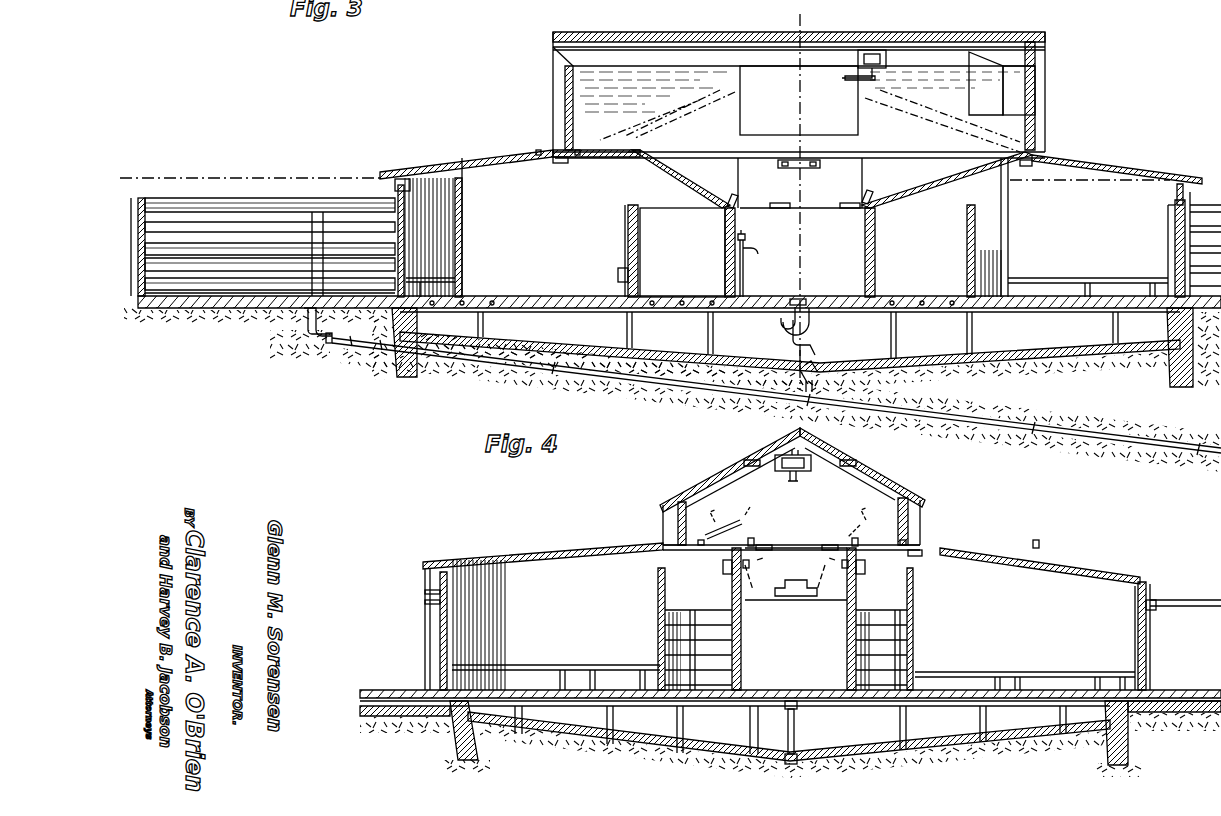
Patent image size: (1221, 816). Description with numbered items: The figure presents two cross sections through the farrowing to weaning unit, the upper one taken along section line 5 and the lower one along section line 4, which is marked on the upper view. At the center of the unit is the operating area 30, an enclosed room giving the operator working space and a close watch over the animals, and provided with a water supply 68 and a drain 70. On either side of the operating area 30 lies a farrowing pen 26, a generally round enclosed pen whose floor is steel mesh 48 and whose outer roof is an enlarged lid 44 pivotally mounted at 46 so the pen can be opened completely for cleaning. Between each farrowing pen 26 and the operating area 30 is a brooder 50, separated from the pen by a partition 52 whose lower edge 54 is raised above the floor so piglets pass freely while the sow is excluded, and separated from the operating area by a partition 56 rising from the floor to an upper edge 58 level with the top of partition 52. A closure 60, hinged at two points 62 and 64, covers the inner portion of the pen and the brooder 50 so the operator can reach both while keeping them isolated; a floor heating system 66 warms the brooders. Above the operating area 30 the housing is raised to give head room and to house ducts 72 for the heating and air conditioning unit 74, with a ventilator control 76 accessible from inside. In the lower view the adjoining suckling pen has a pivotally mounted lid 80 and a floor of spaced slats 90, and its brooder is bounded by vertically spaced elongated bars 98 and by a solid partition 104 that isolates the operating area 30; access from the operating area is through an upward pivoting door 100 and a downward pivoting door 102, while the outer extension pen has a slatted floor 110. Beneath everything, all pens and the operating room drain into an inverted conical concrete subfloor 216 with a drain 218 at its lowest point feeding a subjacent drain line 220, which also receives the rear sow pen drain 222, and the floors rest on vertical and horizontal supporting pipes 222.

In FIG. 3, the section line 4— 4 is at (815, 8).
In FIG. 3, the section line 5— 5 is at (111, 205).
In FIG. 3, the farrowing pen 26 is at (445, 205).
In FIG. 3, the operating area 30 is at (800, 252).
In FIG. 3, the lid 44 is at (458, 165).
In FIG. 3, the pivot mounting 46 is at (538, 157).
In FIG. 3, the steel mesh floor 48 is at (546, 310).
In FIG. 3, the brooder 50 is at (682, 252).
In FIG. 3, the partition 52 is at (633, 240).
In FIG. 3, the lower edge 54 is at (626, 272).
In FIG. 3, the partition 56 is at (725, 250).
In FIG. 3, the upper edge 58 is at (738, 208).
In FIG. 3, the closure 60 is at (668, 172).
In FIG. 4, the closure 60 is at (792, 555).
In FIG. 3, the hinge point 62 is at (577, 157).
In FIG. 3, the hinge point 64 is at (636, 147).
In FIG. 3, the floor heating system 66 is at (678, 309).
In FIG. 3, the water supply 68 is at (742, 270).
In FIG. 3, the drain 70 is at (800, 303).
In FIG. 3, the ducts 72 is at (563, 100).
In FIG. 4, the ducts 72 is at (885, 502).
In FIG. 3, the heating and air conditioning unit 74 is at (1020, 80).
In FIG. 3, the ventilator control 76 is at (873, 56).
In FIG. 4, the ventilator control 76 is at (820, 457).
In FIG. 4, the lid 80 is at (998, 553).
In FIG. 4, the slats 90 is at (587, 685).
In FIG. 4, the elongated bars 98 is at (920, 658).
In FIG. 4, the door 100 is at (720, 545).
In FIG. 4, the door 102 is at (728, 574).
In FIG. 4, the solid partition 104 is at (742, 660).
In FIG. 4, the slatted floor 110 is at (1178, 695).
In FIG. 3, the concrete subfloor 216 is at (920, 360).
In FIG. 3, the drain 218 is at (802, 365).
In FIG. 3, the drain line 220 is at (925, 425).
In FIG. 3, the supporting pipes 222 is at (305, 308).
In FIG. 4, the supporting pipes 222 is at (830, 720).